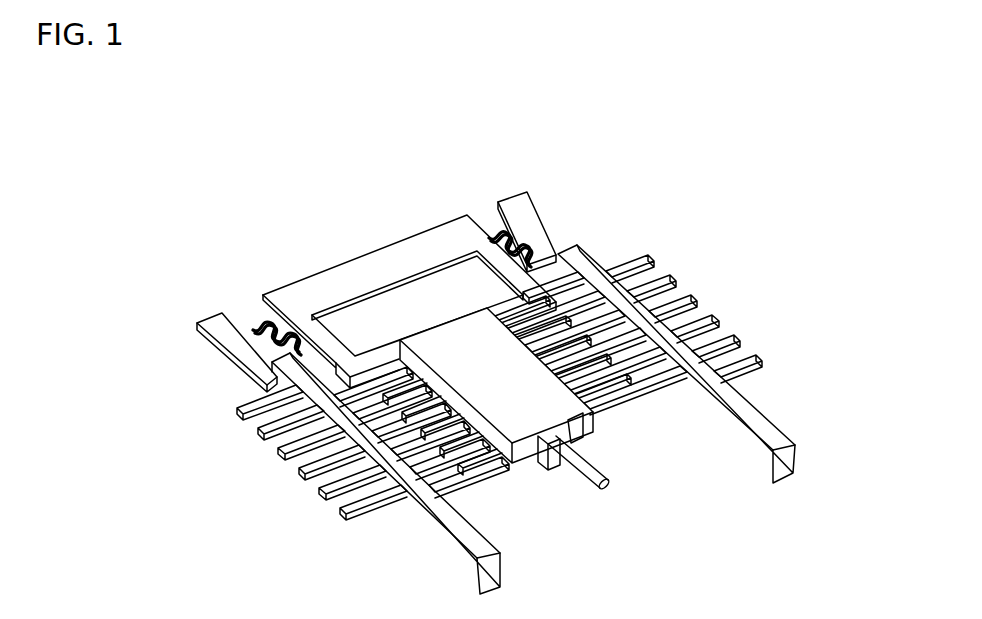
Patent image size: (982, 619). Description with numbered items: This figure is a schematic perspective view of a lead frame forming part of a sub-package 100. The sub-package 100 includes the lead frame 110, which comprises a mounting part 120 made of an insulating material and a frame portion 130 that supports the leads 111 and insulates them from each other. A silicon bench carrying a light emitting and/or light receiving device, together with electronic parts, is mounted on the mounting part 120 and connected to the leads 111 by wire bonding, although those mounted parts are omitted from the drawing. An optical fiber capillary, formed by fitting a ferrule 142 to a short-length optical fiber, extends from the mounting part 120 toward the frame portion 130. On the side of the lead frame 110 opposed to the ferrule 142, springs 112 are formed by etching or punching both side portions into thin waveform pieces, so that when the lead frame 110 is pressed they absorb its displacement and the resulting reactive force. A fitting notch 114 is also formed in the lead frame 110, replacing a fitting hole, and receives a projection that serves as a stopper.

The sub-package 100 is at (301, 271).
The lead frame 110 is at (388, 246).
The leads 111 is at (735, 333).
The springs 112 is at (516, 218).
The fitting notch 114 is at (247, 312).
The mounting part 120 is at (527, 450).
The frame portion 130 is at (787, 462).
The ferrule 142 is at (610, 490).